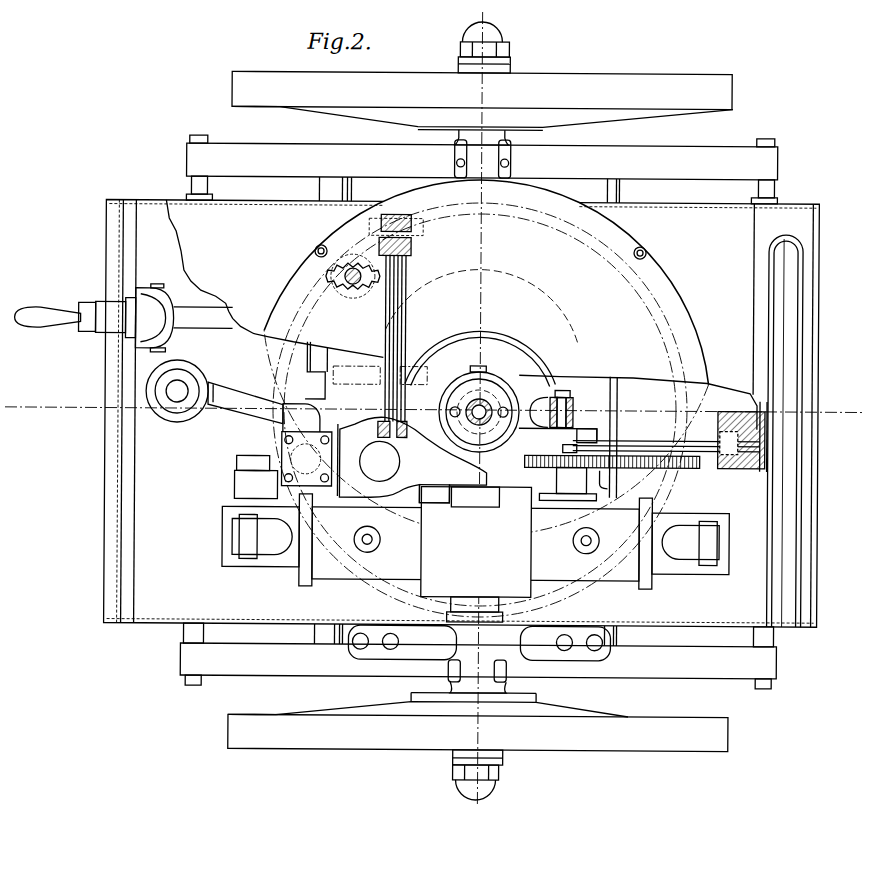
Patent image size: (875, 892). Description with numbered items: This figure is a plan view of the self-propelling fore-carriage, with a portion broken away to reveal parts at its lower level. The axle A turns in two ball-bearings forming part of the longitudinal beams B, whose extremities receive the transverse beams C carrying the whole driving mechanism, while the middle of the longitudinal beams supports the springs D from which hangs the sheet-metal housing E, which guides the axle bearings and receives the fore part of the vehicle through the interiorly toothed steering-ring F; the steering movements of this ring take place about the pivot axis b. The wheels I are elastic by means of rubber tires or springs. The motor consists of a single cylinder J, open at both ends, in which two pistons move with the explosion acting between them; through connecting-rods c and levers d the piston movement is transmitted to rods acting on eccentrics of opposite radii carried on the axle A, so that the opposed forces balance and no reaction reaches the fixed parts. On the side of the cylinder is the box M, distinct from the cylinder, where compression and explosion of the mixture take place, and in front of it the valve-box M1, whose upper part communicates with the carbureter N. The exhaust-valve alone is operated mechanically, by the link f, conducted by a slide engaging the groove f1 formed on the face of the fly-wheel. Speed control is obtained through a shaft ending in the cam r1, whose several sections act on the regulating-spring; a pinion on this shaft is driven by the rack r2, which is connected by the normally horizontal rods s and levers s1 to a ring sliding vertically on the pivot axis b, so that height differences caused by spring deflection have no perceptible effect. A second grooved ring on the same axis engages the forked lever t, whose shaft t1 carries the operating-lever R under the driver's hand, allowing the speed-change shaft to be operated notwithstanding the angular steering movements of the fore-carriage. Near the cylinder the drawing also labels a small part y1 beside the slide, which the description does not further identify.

The axle A is at (500, 70).
The longitudinal beams B is at (481, 411).
The transverse beams C is at (648, 190).
The springs D is at (480, 412).
The sheet-metal housing E is at (462, 414).
The steering-ring F is at (486, 399).
The wheels I is at (480, 411).
The cylinder J is at (476, 554).
The box M is at (413, 460).
The valve-box M1 is at (237, 458).
The carbureter N is at (176, 415).
The operating-lever R is at (395, 325).
The pivot axis b is at (483, 395).
The connecting-rods c is at (298, 545).
The levers d is at (232, 540).
The link f is at (478, 420).
The groove f1 is at (512, 425).
The plate g is at (245, 410).
The cam r1 is at (578, 484).
The rack r2 is at (612, 469).
The rods s is at (660, 458).
The levers s1 is at (742, 445).
The forked lever t is at (479, 400).
The shaft of forked lever t1 is at (398, 300).
The block y1 is at (420, 498).